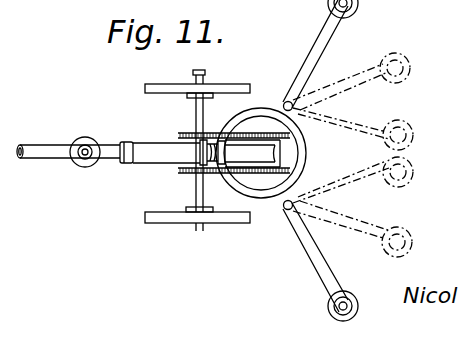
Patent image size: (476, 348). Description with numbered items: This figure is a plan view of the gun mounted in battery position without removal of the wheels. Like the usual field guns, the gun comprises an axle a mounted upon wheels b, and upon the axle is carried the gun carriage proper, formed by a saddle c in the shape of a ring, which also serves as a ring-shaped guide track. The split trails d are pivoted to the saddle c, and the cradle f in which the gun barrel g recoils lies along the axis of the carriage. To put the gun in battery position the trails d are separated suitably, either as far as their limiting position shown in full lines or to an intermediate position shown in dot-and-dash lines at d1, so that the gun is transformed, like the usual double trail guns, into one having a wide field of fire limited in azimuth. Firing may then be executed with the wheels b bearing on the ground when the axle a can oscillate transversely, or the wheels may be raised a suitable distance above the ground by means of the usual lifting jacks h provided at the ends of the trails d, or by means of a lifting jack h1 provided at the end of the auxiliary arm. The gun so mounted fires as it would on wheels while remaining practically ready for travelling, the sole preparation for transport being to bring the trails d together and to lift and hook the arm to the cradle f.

The wheels b is at (148, 88).
The axle a is at (198, 113).
The lifting jack h1 is at (85, 143).
The cradle f is at (123, 142).
The gun barrel g is at (148, 158).
The saddle c is at (306, 153).
The split trails d is at (318, 50).
The lifting jacks h is at (357, 12).
The intermediate position of the trails d1 is at (357, 224).